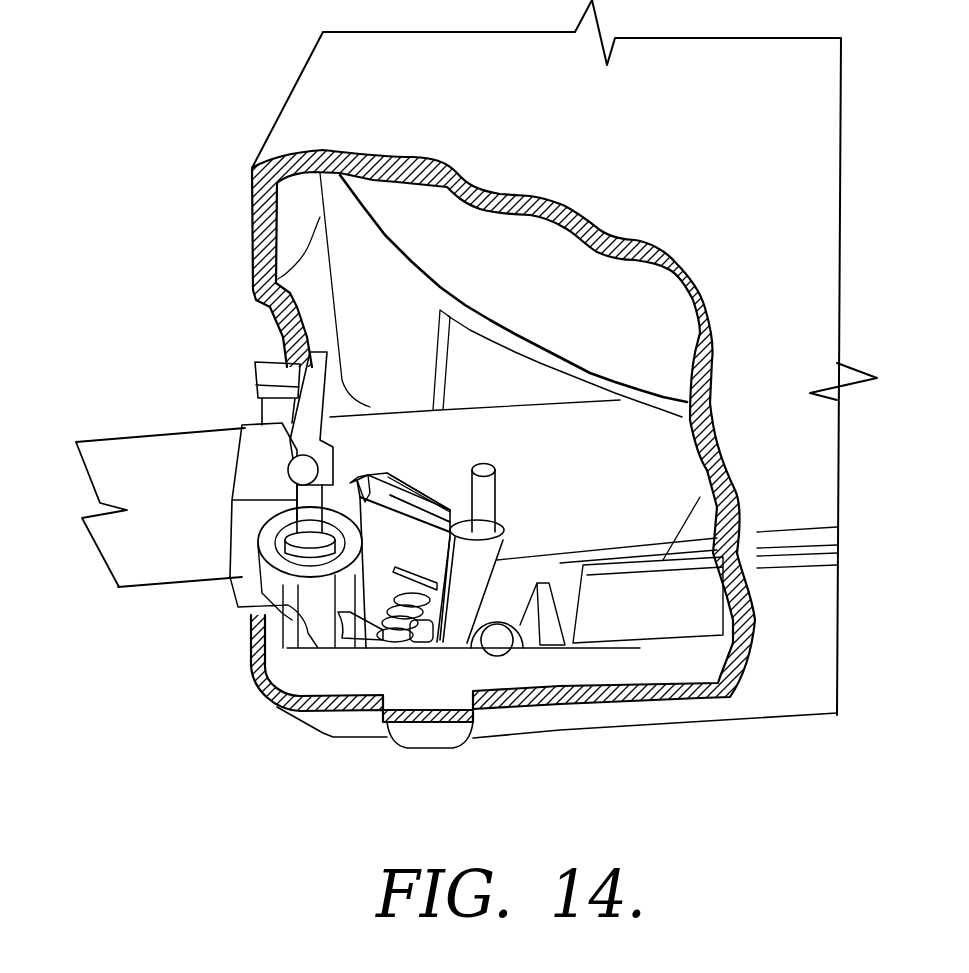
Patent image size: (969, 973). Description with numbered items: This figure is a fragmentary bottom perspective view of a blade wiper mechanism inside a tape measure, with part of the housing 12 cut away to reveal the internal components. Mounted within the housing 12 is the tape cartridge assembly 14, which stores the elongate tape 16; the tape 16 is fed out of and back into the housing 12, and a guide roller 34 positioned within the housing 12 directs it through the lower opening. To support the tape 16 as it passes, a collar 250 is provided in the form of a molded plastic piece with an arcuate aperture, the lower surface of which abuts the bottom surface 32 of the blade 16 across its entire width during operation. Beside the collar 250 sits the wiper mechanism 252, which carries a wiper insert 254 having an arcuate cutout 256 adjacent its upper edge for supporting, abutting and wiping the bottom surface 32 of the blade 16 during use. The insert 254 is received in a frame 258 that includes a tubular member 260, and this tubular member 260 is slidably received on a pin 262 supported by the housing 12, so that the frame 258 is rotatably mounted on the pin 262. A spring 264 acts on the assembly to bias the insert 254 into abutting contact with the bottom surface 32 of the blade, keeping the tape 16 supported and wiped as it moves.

The housing 12 is at (302, 112).
The tape cartridge assembly 14 is at (427, 195).
The elongate tape 16 is at (118, 453).
The bottom surface of the blade 32 is at (490, 362).
The guide roller 34 is at (297, 558).
The collar 250 is at (272, 370).
The wiper mechanism 252 is at (397, 473).
The wiper insert 254 is at (440, 512).
The arcuate cutout 256 is at (367, 643).
The frame 258 is at (362, 475).
The tubular member 260 is at (497, 550).
The pin 262 is at (487, 490).
The spring 264 is at (392, 645).